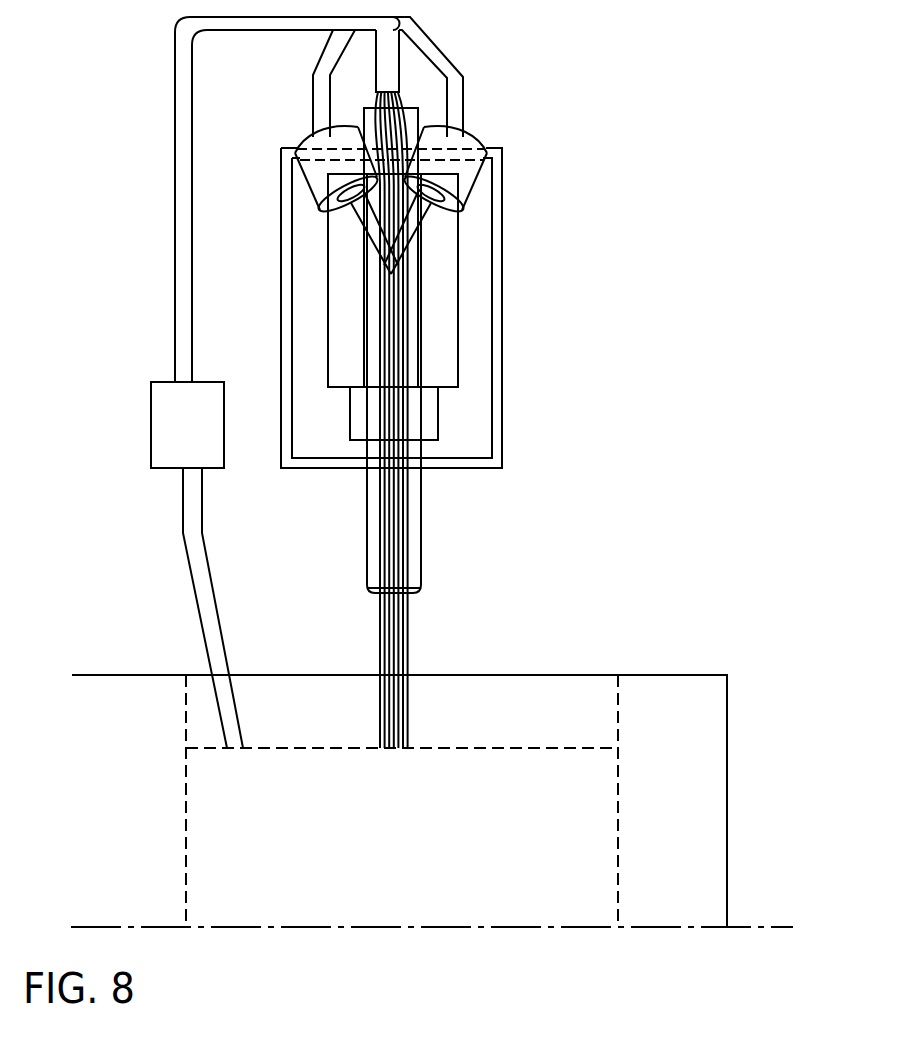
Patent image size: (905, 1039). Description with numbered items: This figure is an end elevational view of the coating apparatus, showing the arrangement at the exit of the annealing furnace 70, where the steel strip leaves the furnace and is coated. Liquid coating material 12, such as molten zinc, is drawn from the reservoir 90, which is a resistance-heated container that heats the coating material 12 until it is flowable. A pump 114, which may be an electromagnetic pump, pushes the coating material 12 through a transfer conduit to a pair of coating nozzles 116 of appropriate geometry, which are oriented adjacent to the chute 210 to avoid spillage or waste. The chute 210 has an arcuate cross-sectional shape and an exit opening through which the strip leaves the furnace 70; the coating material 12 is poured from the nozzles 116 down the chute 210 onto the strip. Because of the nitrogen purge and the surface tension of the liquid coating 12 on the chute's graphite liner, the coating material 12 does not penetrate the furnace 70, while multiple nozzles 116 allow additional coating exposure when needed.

The coating material 12 is at (405, 648).
The annealing furnace 70 is at (503, 357).
The reservoir 90 is at (727, 773).
The pump 114 is at (175, 437).
The coating nozzles 116 is at (315, 167).
The chute 210 is at (438, 535).